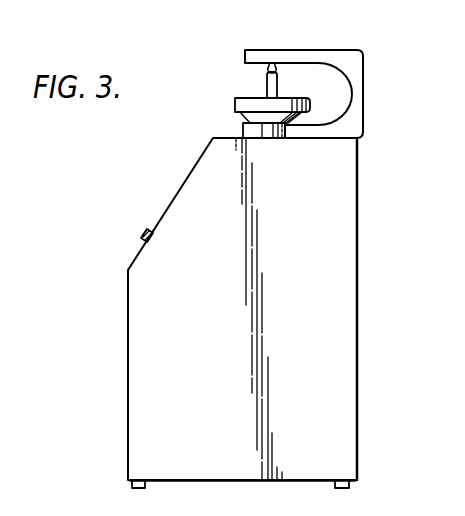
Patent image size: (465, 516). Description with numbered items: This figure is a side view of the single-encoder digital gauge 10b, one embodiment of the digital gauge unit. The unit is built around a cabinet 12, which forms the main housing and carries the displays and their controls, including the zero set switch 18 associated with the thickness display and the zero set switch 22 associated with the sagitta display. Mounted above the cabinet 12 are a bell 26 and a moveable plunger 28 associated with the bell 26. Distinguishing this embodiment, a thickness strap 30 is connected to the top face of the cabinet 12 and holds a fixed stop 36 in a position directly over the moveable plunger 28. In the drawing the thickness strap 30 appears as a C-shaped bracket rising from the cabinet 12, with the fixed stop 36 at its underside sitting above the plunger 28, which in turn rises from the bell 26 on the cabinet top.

The single-encoder digital gauge 10b is at (382, 110).
The cabinet 12 is at (358, 200).
The zero set switch 18 is at (142, 236).
The zero set switch 22 is at (147, 235).
The bell 26 is at (236, 106).
The plunger 28 is at (279, 81).
The thickness strap 30 is at (336, 51).
The fixed stop 36 is at (263, 70).